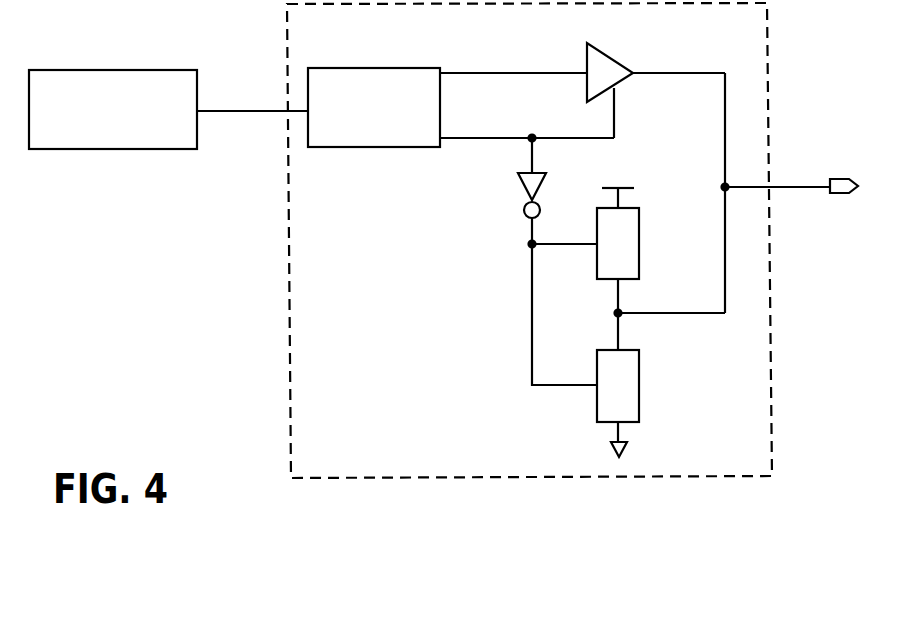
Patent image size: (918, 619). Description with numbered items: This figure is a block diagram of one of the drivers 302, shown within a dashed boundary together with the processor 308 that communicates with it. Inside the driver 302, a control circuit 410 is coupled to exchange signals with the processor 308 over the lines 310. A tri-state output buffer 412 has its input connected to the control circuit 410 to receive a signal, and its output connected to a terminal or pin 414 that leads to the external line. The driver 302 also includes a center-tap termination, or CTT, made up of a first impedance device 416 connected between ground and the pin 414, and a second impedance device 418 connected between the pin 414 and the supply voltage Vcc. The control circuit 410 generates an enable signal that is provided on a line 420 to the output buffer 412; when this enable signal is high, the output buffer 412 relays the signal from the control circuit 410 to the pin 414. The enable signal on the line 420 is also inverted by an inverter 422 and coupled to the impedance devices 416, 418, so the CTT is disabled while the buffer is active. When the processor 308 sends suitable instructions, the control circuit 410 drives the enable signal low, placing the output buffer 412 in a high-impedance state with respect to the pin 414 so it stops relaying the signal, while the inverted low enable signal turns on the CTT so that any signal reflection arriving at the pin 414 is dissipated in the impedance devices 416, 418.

The driver 302 is at (289, 370).
The processor 308 is at (113, 70).
The lines 310 is at (240, 111).
The control circuit 410 is at (376, 67).
The tri-state output buffer 412 is at (605, 55).
The terminal or pin 414 is at (837, 177).
The first impedance device 416 is at (639, 385).
The second impedance device 418 is at (639, 244).
The line 420 is at (481, 136).
The inverter 422 is at (521, 187).